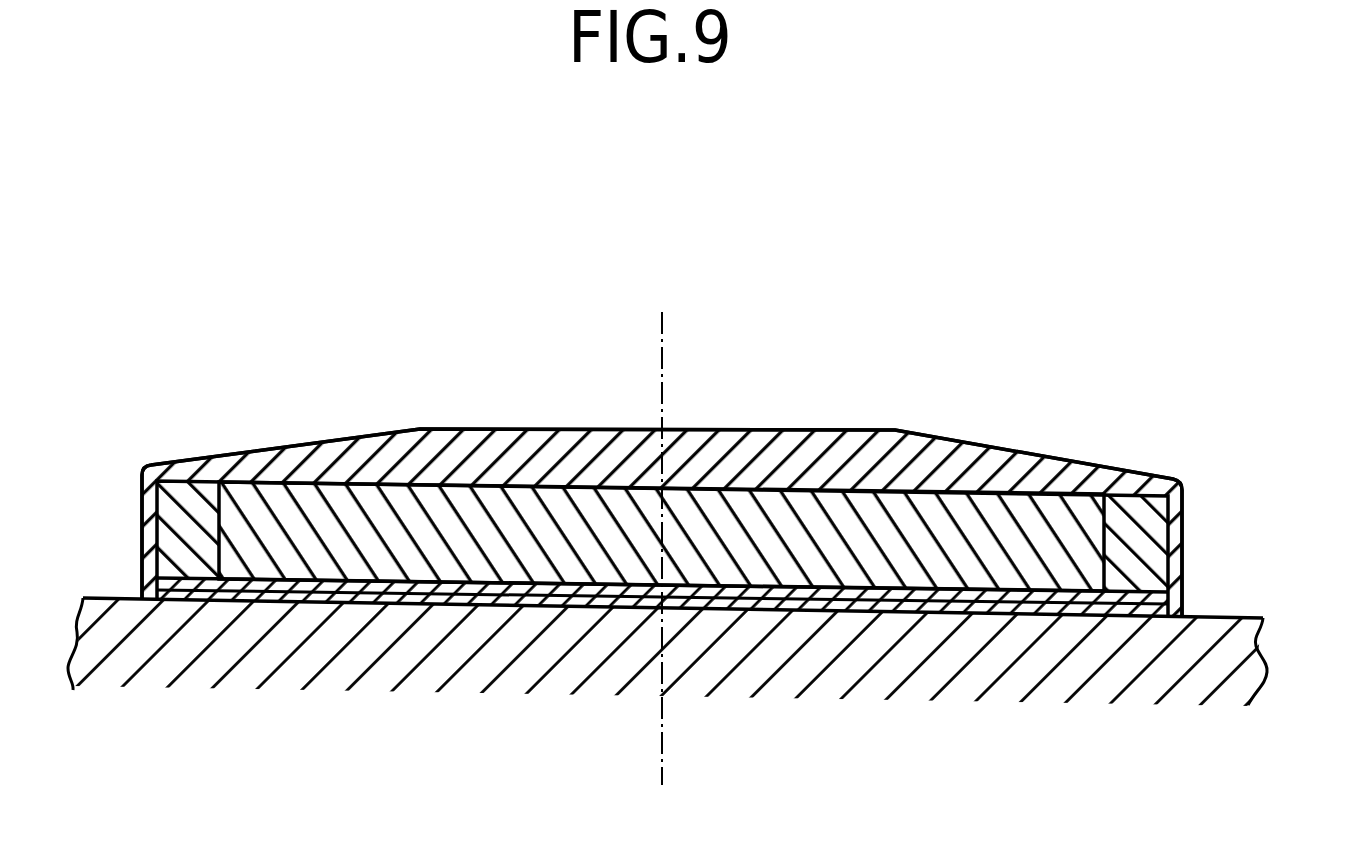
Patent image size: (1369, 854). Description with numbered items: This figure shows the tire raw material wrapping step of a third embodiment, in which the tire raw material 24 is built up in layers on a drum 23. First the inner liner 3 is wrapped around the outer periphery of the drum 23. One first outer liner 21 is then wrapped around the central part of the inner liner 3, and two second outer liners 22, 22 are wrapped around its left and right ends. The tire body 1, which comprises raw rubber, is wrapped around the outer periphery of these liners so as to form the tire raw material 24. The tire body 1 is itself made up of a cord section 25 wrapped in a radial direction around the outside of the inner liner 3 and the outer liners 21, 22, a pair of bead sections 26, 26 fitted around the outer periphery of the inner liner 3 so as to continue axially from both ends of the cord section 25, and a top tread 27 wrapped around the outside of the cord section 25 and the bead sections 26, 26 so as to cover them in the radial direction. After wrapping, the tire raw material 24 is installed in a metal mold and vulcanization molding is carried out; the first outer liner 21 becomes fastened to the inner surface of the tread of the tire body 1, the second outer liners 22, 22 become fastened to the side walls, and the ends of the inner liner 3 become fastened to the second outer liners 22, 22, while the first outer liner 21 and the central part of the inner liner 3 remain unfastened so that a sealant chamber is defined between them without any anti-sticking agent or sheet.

The tire body 1 is at (604, 425).
The inner liner 3 is at (540, 608).
The first outer liner 21 is at (722, 593).
The second outer liner 22 is at (283, 586).
The drum 23 is at (1207, 640).
The tire raw material 24 is at (845, 397).
The cord section 25 is at (525, 515).
The bead section 26 is at (188, 503).
The top tread 27 is at (750, 455).